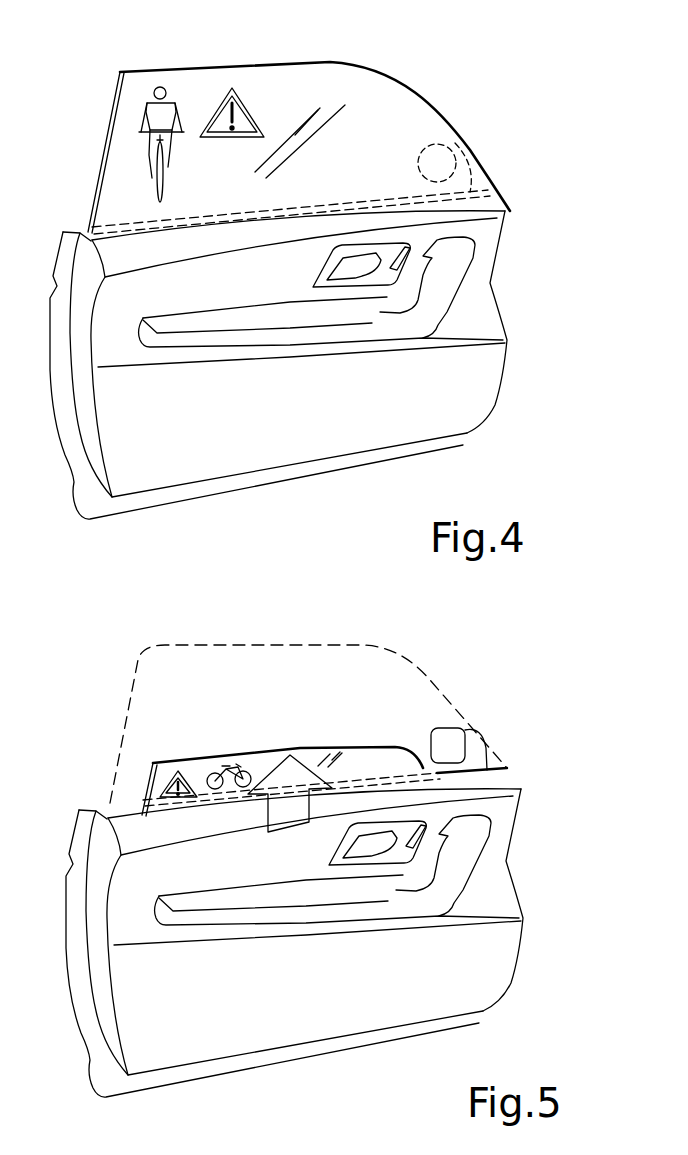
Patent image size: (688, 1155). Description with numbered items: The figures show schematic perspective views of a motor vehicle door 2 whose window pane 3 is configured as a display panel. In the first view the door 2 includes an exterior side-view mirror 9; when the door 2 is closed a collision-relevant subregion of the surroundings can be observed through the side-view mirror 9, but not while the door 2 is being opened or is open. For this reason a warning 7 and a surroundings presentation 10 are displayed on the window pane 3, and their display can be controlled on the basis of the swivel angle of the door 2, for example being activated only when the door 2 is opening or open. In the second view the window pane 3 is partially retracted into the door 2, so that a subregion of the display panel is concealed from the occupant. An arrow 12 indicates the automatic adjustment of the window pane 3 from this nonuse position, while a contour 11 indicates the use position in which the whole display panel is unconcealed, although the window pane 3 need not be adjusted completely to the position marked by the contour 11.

In FIG. 4, the door 2 is at (338, 427).
In FIG. 5, the door 2 is at (500, 958).
In FIG. 4, the window pane 3 is at (393, 117).
In FIG. 5, the window pane 3 is at (350, 765).
In FIG. 4, the warning 7 is at (225, 102).
In FIG. 5, the warning 7 is at (168, 763).
In FIG. 4, the side-view mirror 9 is at (433, 165).
In FIG. 4, the surroundings presentation 10 is at (150, 114).
In FIG. 5, the contour 11 is at (430, 675).
In FIG. 5, the arrow 12 is at (285, 815).